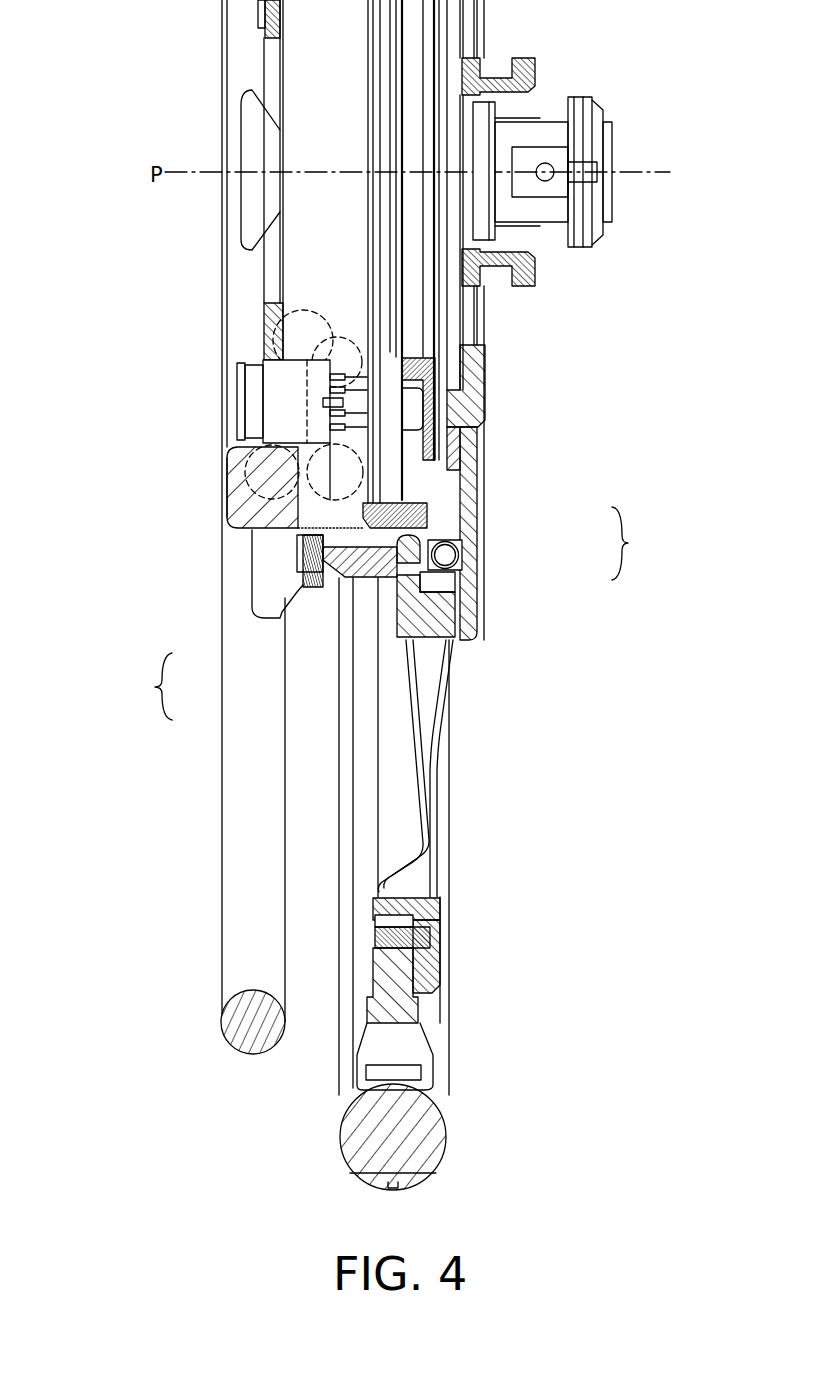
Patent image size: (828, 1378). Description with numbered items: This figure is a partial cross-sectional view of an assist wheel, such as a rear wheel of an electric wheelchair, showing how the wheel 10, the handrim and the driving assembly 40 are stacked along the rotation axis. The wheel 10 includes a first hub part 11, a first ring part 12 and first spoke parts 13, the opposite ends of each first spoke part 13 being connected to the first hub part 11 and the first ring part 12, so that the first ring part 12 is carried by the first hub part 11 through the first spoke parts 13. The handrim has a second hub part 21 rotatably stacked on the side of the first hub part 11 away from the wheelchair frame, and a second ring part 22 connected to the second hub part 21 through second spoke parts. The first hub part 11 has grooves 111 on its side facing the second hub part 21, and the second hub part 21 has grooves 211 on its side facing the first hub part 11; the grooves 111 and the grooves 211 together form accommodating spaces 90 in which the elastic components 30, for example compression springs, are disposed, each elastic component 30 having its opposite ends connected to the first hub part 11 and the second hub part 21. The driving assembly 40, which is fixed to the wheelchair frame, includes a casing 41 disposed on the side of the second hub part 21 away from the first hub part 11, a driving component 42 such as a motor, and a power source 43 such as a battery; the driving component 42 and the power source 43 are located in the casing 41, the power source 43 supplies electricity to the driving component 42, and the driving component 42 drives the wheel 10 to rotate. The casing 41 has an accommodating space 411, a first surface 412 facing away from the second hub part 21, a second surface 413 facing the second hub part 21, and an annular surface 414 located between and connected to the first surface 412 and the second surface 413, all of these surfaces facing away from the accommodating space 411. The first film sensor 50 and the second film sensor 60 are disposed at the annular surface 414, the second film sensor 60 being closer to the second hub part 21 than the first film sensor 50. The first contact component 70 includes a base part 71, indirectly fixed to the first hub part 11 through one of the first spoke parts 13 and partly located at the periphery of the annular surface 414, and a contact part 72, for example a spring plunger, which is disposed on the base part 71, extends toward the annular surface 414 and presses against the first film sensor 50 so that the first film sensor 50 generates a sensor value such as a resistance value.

The wheel 10 is at (462, 1093).
The first hub part 11 is at (463, 580).
The grooves 111 is at (482, 542).
The first ring part 12 is at (415, 1140).
The first spoke parts 13 is at (422, 743).
The second hub part 21 is at (443, 603).
The grooves 211 is at (460, 567).
The second ring part 22 is at (253, 1022).
The elastic components 30 is at (460, 538).
The driving assembly 40 is at (247, 298).
The casing 41 is at (235, 490).
The accommodating space 411 is at (342, 366).
The first surface 412 is at (217, 465).
The second surface 413 is at (452, 465).
The annular surface 414 is at (242, 538).
The driving component 42 is at (310, 262).
The power source 43 is at (278, 312).
The first film sensor 50 is at (300, 517).
The second film sensor 60 is at (440, 512).
The first contact component 70 is at (148, 686).
The base part 71 is at (363, 580).
The contact part 72 is at (313, 590).
The accommodating spaces 90 is at (636, 543).